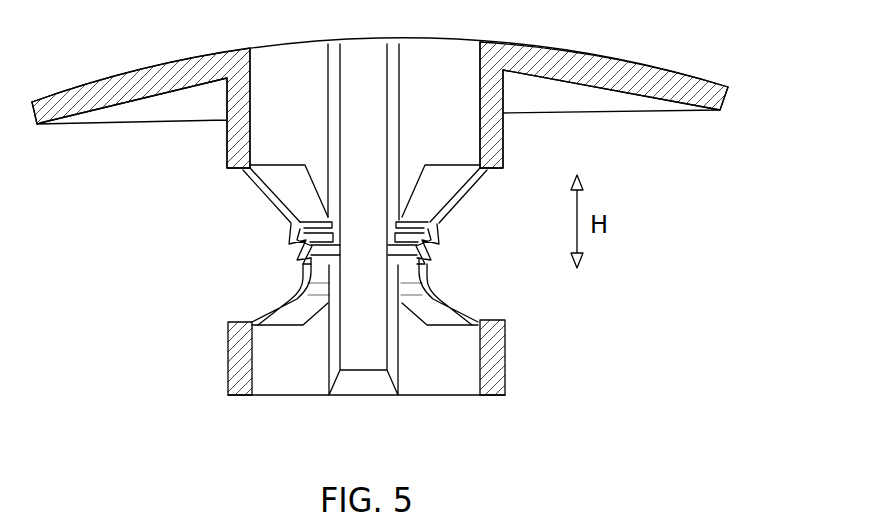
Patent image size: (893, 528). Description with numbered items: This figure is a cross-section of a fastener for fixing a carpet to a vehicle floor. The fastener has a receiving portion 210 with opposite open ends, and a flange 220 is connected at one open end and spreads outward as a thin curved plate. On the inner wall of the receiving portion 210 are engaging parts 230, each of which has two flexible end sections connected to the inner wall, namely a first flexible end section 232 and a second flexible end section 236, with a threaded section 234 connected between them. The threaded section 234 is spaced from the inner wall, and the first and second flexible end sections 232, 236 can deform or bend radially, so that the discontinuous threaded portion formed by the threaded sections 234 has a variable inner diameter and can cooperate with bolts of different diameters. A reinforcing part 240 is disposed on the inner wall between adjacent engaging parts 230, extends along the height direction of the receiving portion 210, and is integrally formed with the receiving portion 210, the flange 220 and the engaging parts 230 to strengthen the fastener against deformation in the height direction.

The receiving portion 210 is at (507, 358).
The flange 220 is at (141, 67).
The engaging part 230 is at (267, 207).
The first flexible end section 232 is at (292, 183).
The threaded section 234 is at (290, 250).
The second flexible end section 236 is at (282, 327).
The reinforcing part 240 is at (363, 43).